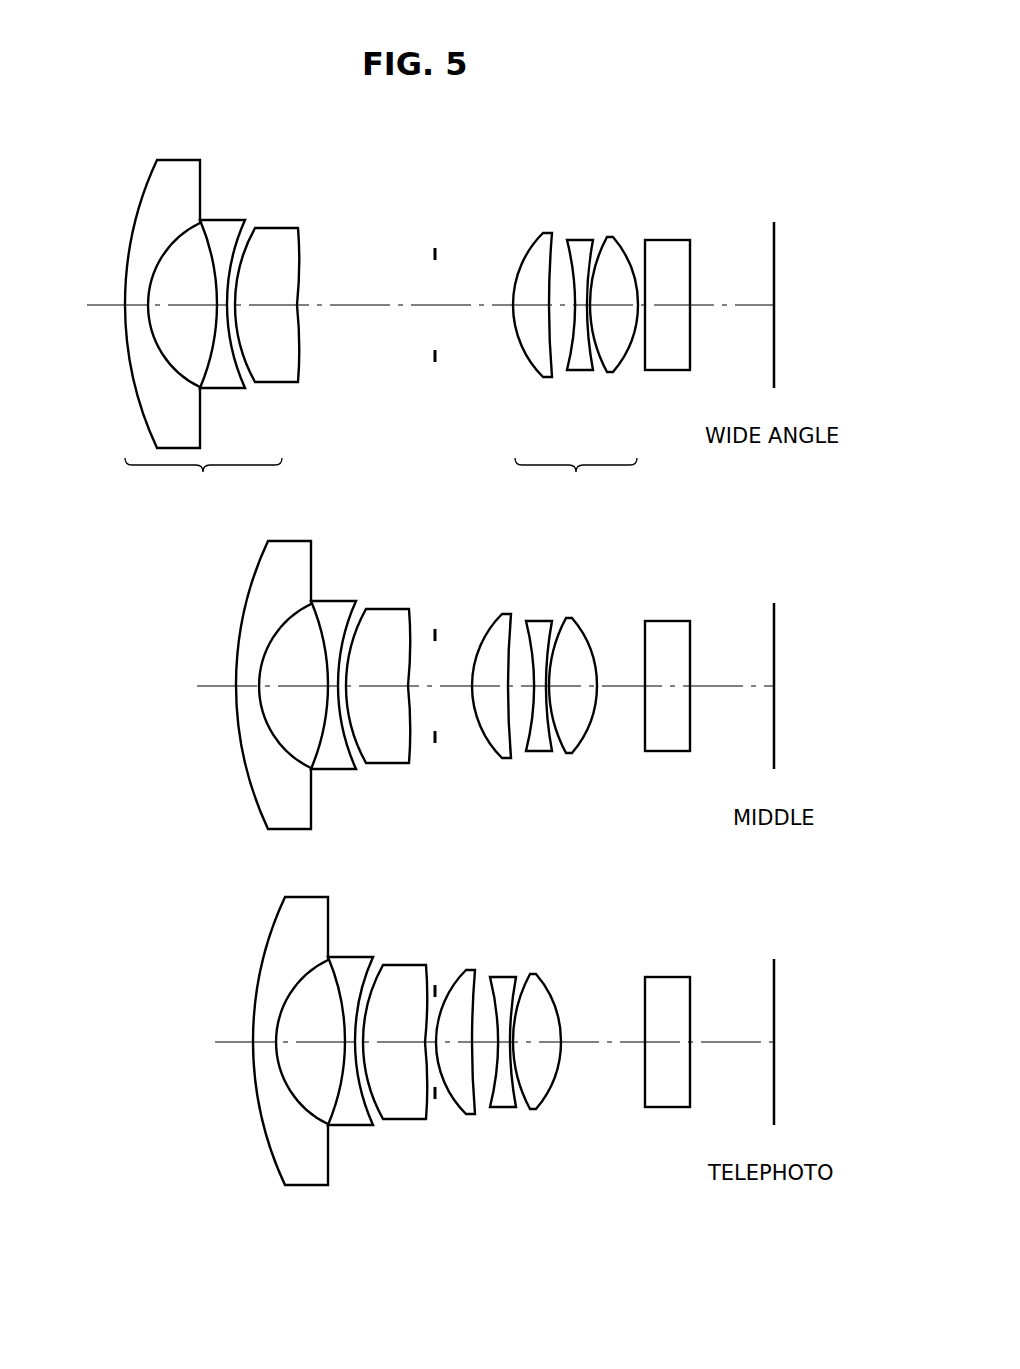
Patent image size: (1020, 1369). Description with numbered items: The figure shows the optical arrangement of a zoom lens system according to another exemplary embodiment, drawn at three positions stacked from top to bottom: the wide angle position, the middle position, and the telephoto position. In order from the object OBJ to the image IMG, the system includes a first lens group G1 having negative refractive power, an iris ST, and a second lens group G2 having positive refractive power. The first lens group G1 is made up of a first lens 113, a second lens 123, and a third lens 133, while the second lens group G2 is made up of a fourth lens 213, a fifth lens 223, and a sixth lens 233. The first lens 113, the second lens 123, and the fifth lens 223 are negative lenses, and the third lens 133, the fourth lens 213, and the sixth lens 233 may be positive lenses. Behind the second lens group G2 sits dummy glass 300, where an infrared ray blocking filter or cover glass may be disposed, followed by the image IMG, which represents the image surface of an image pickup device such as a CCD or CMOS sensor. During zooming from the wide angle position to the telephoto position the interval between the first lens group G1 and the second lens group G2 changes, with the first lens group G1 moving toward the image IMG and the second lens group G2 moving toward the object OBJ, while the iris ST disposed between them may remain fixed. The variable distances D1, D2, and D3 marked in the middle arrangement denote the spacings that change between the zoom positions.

The first lens 113 is at (178, 160).
The second lens 123 is at (228, 220).
The third lens 133 is at (279, 228).
The fourth lens 213 is at (546, 233).
The fifth lens 223 is at (580, 240).
The sixth lens 233 is at (610, 237).
The dummy glass 300 is at (667, 240).
The iris ST is at (435, 248).
The image IMG is at (774, 222).
The object OBJ is at (407, 668).
The first lens group G1 is at (203, 479).
The second lens group G2 is at (576, 478).
The variable distance D1 is at (418, 688).
The variable distance D2 is at (458, 688).
The variable distance D3 is at (618, 688).